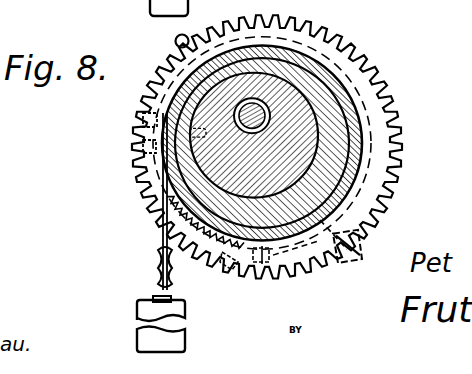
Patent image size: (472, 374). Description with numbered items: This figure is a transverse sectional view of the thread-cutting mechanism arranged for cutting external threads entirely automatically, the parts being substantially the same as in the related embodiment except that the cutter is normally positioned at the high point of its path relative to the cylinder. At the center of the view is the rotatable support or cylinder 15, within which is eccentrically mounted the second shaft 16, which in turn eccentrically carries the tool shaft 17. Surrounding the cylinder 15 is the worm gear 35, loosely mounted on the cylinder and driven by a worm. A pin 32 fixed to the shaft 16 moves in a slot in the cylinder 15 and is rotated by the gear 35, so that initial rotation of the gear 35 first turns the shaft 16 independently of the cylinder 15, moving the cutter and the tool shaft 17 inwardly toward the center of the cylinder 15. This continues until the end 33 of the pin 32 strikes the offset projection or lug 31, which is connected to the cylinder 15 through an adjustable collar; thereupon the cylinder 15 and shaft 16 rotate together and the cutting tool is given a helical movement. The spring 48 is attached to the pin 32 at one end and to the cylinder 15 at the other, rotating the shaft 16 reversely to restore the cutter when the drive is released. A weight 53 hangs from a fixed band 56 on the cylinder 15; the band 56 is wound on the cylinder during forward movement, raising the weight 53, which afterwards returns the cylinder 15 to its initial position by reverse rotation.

The rotatable support 15 is at (337, 135).
The second shaft 16 is at (287, 158).
The tool shaft 17 is at (297, 80).
The offset projection 31 is at (176, 40).
The pin 32 is at (143, 129).
The end of the pin 33 is at (123, 150).
The worm gear 35 is at (384, 101).
The spring 48 is at (232, 268).
The weight 53 is at (185, 311).
The fixed band 56 is at (162, 245).